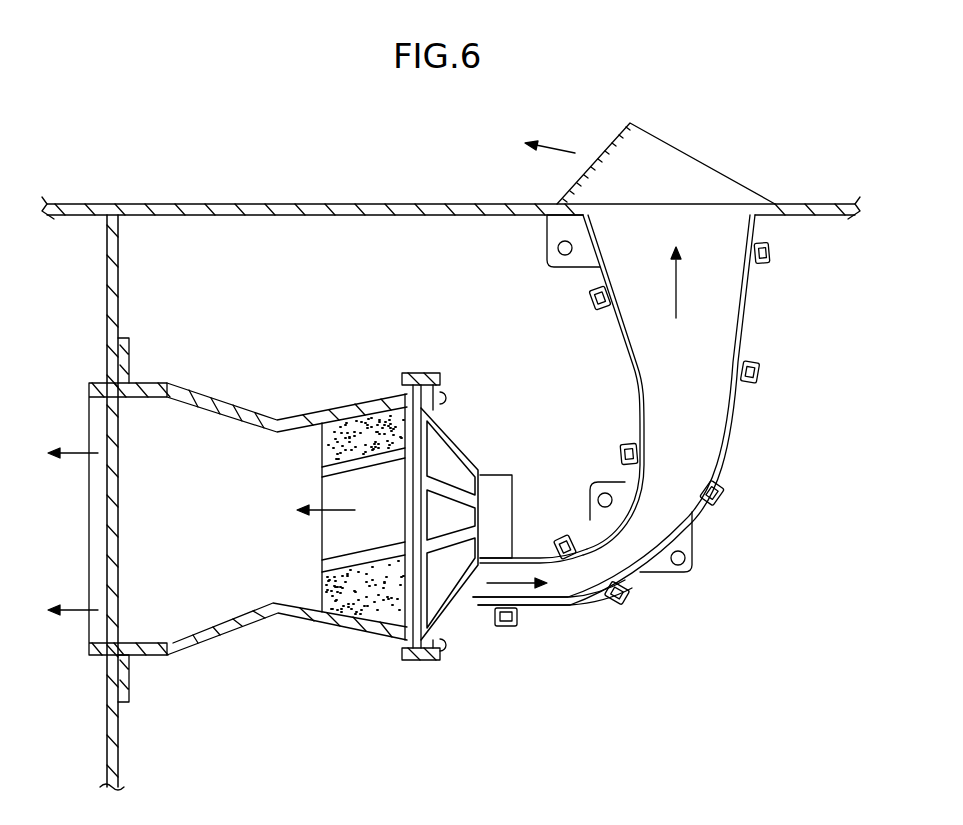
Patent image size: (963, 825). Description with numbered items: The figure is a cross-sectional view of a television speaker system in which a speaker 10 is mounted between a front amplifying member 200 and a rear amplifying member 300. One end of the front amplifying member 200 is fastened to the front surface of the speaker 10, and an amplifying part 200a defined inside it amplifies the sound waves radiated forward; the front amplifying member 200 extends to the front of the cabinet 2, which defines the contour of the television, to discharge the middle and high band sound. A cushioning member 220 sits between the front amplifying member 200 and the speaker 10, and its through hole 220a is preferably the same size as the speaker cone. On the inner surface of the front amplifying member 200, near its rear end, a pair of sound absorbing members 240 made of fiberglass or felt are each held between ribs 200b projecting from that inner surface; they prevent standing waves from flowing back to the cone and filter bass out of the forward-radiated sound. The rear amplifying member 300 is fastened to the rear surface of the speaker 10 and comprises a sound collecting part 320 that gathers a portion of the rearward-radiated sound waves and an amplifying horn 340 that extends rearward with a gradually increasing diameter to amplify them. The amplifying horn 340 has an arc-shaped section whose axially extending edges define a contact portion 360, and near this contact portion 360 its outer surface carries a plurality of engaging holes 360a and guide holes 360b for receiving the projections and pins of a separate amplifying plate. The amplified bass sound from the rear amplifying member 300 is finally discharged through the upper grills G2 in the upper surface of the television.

The cabinet 2 is at (373, 203).
The speaker 10 is at (447, 430).
The front amplifying member 200 is at (177, 643).
The amplifying part 200a is at (230, 438).
The ribs 200b is at (327, 557).
The cushioning member 220 is at (407, 653).
The through hole 220a is at (412, 432).
The sound absorbing members 240 is at (358, 630).
The rear amplifying member 300 is at (728, 438).
The sound collecting part 320 is at (477, 585).
The amplifying horn 340 is at (717, 385).
The contact portion 360 is at (747, 327).
The engaging holes 360a is at (617, 603).
The guide holes 360b is at (678, 565).
The upper grills G2 is at (625, 160).